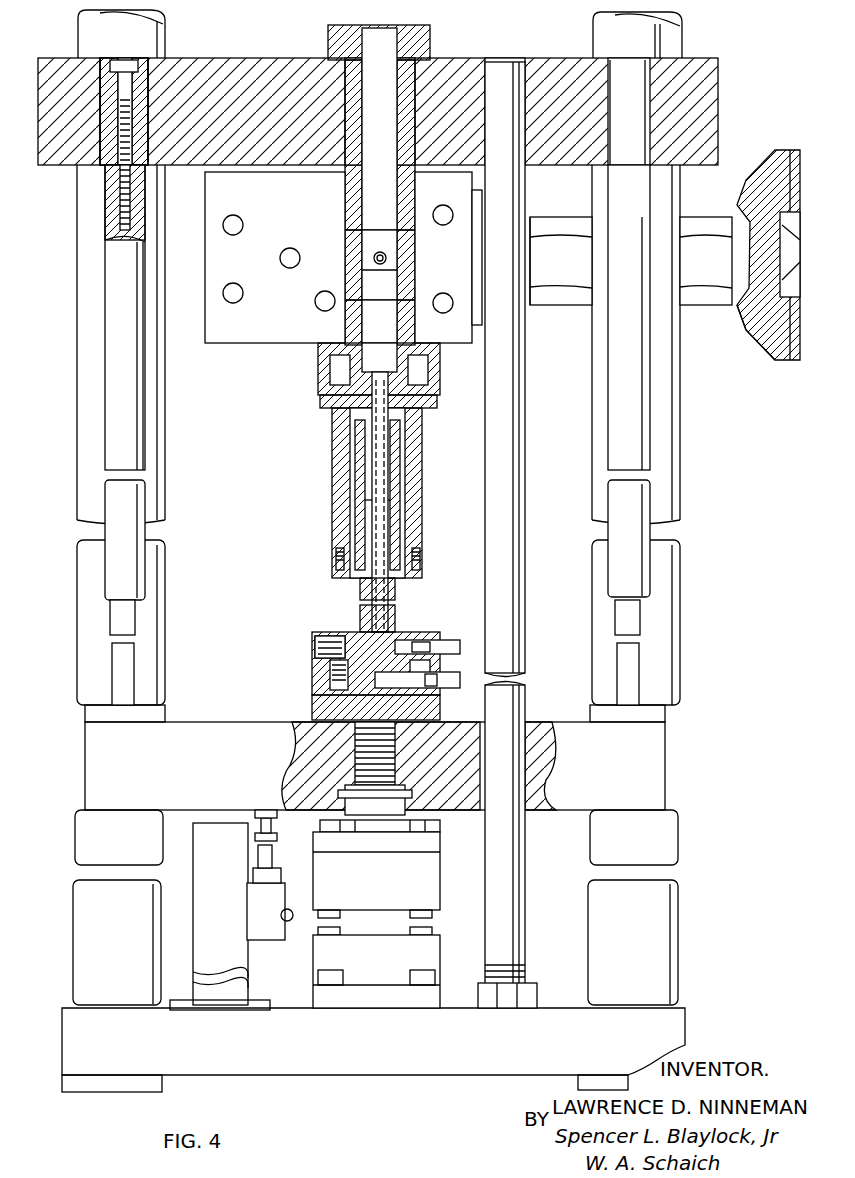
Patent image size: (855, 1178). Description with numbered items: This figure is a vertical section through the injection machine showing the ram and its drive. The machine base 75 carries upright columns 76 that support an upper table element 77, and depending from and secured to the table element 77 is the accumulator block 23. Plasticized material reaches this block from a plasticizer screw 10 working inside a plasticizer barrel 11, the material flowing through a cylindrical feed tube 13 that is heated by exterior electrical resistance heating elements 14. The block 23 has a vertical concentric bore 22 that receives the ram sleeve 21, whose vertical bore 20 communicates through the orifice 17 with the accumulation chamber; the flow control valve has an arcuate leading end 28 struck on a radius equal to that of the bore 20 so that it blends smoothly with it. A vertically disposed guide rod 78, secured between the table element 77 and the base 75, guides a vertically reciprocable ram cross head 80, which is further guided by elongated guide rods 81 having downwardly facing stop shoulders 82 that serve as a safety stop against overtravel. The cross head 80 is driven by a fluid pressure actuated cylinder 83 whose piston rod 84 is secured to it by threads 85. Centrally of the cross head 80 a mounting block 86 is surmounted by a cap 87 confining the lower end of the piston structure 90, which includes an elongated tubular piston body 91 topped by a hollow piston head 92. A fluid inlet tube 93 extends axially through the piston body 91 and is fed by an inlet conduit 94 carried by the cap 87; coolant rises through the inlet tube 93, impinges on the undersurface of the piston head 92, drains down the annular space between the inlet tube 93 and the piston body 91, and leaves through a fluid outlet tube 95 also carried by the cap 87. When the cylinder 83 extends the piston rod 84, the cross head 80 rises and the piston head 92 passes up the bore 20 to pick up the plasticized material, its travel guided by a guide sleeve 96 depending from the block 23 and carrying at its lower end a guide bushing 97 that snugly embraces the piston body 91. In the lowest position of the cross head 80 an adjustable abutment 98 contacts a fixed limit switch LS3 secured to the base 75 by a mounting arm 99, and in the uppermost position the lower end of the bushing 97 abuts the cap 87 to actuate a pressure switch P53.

The plasticizer screw 10 is at (785, 263).
The plasticizer barrel 11 is at (760, 322).
The cylindrical feed tube 13 is at (572, 263).
The electrical resistance heating elements 14 is at (547, 305).
The axial bore of valve sleeve 17 is at (380, 252).
The vertical bore of ram sleeve 20 is at (365, 328).
The ram sleeve 21 is at (352, 279).
The concentric bore 22 is at (350, 197).
The accumulator block 23 is at (222, 350).
The arcuate leading end of valve 28 is at (386, 258).
The machine base 75 is at (350, 1058).
The upright columns 76 is at (600, 186).
The upper table element 77 is at (708, 119).
The guide rod 78 is at (500, 448).
The ram cross head 80 is at (650, 768).
The elongated guide rods 81 is at (105, 382).
The stop shoulders 82 is at (115, 608).
The fluid pressure actuated cylinder 83 is at (448, 887).
The piston rod 84 is at (388, 812).
The threads 85 is at (360, 760).
The mounting block 86 is at (318, 706).
The cap 87 is at (430, 668).
The piston structure 90 is at (352, 626).
The tubular piston body 91 is at (396, 591).
The hollow piston head 92 is at (378, 372).
The fluid inlet tube 93 is at (372, 482).
The inlet conduit 94 is at (448, 688).
The fluid outlet tube 95 is at (452, 640).
The guide sleeve 96 is at (412, 448).
The guide bushing 97 is at (402, 538).
The adjustable abutment 98 is at (278, 836).
The mounting arm 99 is at (222, 960).
The limit switch LS3 is at (265, 905).
The pressure switch P53 is at (300, 650).